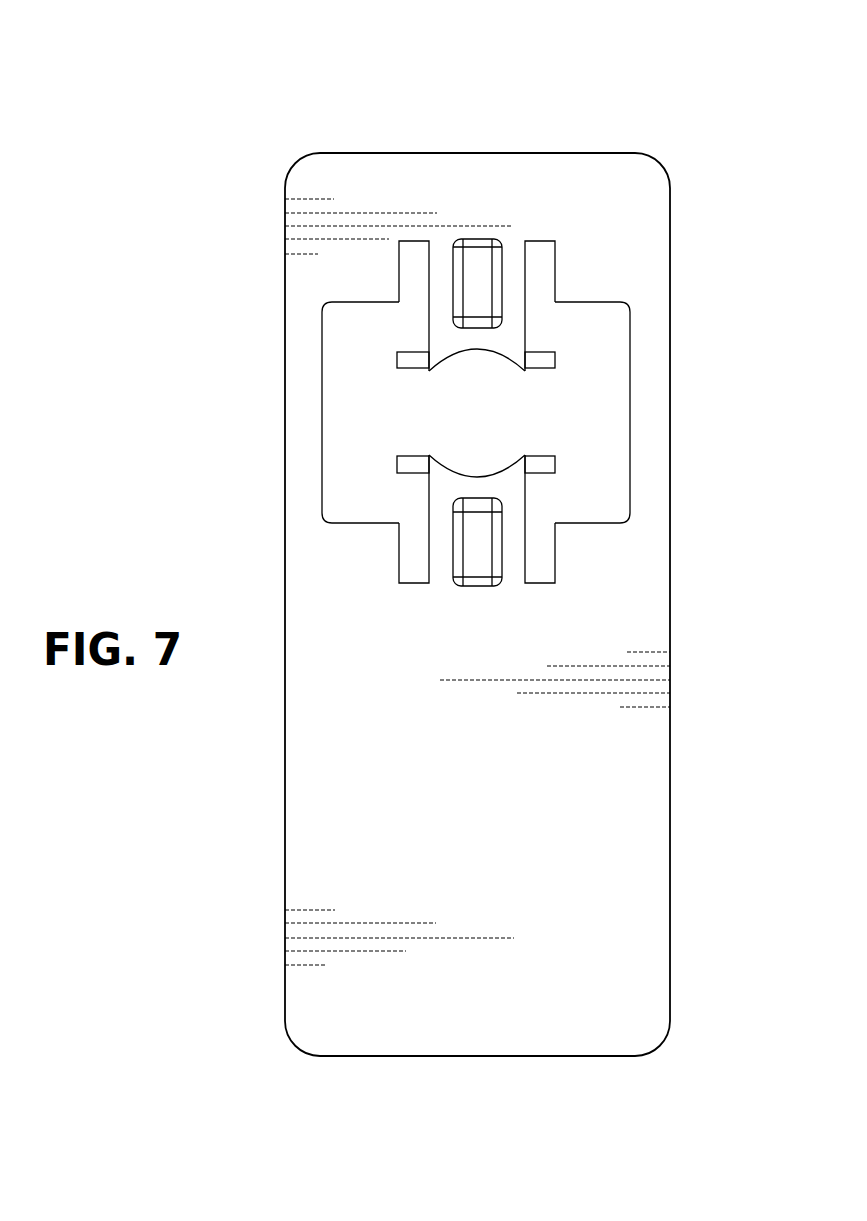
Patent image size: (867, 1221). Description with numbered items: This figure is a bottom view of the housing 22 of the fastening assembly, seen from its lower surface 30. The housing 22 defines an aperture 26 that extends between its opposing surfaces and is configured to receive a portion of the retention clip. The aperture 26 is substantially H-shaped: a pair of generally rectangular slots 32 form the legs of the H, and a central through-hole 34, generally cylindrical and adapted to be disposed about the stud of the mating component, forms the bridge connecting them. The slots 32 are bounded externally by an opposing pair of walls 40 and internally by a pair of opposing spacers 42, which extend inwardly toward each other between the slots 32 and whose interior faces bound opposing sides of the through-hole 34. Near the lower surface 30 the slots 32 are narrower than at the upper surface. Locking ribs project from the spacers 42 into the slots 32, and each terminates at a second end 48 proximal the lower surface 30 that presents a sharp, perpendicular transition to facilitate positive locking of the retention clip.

The housing 22 is at (692, 107).
The aperture 26 is at (625, 438).
The lower surface 30 is at (635, 842).
The slots 32 is at (400, 273).
The through-hole 34 is at (502, 360).
The walls 40 is at (310, 412).
The spacer 42 is at (437, 293).
The second end 48 is at (408, 360).